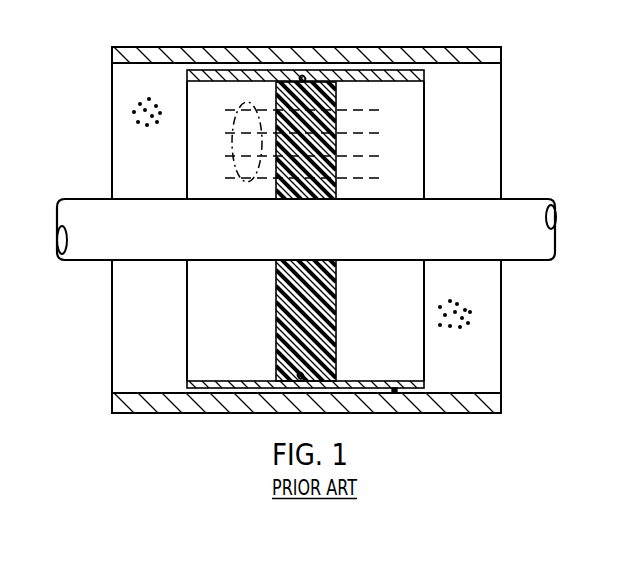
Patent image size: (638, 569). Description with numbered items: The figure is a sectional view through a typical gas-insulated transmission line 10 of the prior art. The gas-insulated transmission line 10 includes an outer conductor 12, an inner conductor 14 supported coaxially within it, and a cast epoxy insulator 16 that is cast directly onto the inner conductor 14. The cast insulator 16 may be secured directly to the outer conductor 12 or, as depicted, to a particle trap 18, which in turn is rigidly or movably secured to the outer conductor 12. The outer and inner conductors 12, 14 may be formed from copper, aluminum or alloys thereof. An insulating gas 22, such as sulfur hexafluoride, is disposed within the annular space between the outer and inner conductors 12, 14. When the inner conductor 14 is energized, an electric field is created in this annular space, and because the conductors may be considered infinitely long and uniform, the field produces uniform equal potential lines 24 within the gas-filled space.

The gas-insulated transmission line 10 is at (63, 70).
The outer conductor 12 is at (446, 52).
The inner conductor 14 is at (522, 212).
The cast epoxy insulator 16 is at (338, 125).
The particle trap 18 is at (240, 73).
The insulating gas 22 is at (130, 113).
The equal potential lines 24 is at (242, 109).